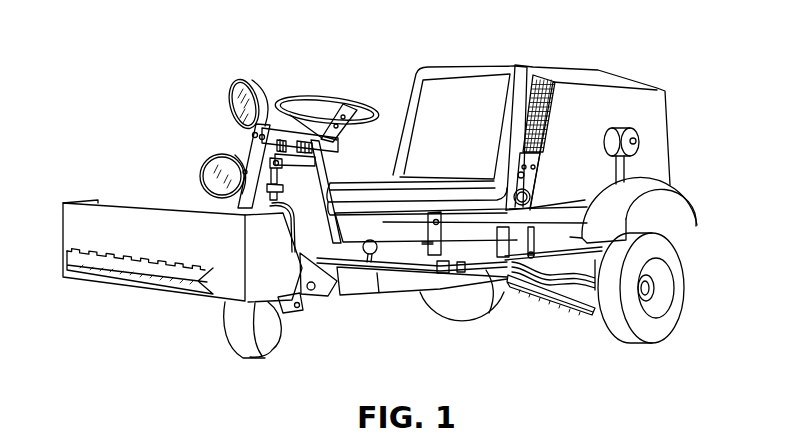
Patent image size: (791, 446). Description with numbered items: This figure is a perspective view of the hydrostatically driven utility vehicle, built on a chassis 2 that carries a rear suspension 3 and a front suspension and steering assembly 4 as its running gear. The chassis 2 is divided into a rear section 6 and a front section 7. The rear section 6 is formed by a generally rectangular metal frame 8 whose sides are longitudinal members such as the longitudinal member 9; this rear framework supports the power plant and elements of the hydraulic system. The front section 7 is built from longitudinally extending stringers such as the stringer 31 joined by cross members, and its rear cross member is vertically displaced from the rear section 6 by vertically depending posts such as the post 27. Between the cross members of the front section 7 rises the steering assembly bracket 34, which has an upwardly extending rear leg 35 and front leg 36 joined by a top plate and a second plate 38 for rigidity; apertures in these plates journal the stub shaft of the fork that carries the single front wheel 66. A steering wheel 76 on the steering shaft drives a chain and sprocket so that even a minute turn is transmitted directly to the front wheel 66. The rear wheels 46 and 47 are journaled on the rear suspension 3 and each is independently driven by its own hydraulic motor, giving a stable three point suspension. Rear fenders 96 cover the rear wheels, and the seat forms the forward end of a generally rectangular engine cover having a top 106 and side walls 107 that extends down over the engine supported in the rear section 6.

The chassis 2 is at (394, 314).
The rear suspension 3 is at (574, 336).
The front suspension and steering assembly 4 is at (307, 330).
The rear section 6 is at (553, 233).
The front section 7 is at (349, 298).
The metal frame 8 is at (547, 211).
The longitudinal member 9 is at (570, 216).
The vertically depending post 27 is at (495, 237).
The longitudinally extending stringer 31 is at (500, 266).
The steering assembly bracket 34 is at (331, 237).
The rear leg 35 is at (320, 163).
The front leg 36 is at (238, 154).
The second plate 38 is at (307, 163).
The rear wheel 46 is at (657, 327).
The rear wheel 47 is at (455, 314).
The front wheel 66 is at (238, 350).
The steering wheel 76 is at (317, 97).
The rear fenders 96 is at (681, 200).
The top 106 is at (611, 73).
The side walls 107 is at (568, 123).